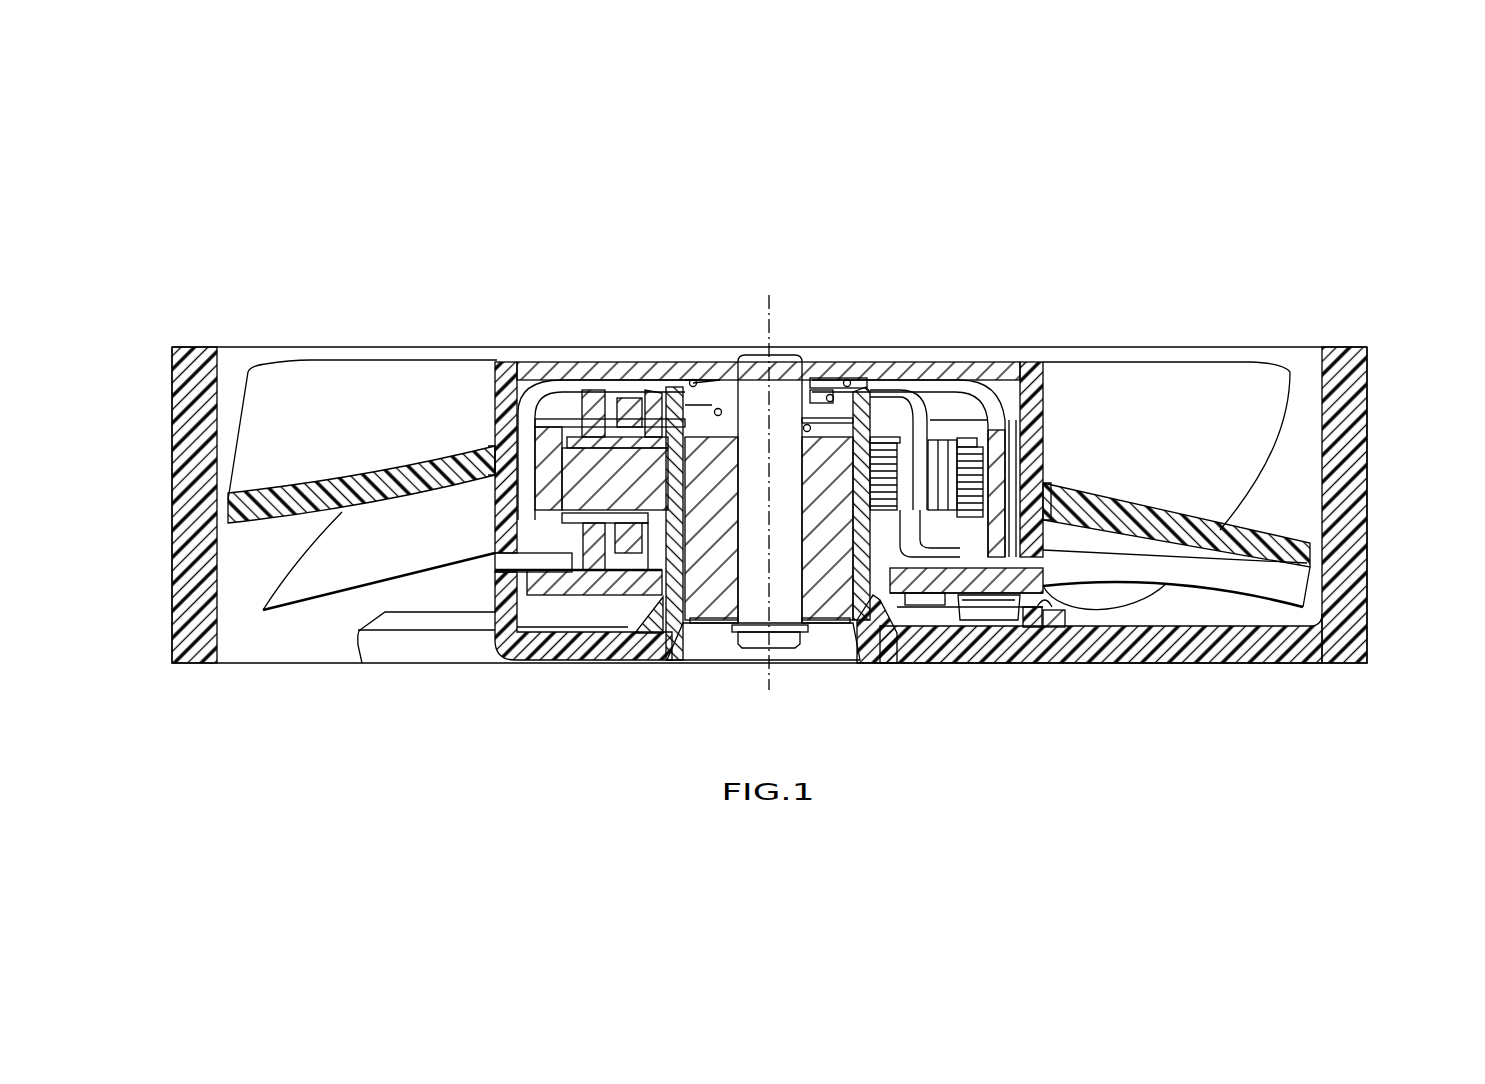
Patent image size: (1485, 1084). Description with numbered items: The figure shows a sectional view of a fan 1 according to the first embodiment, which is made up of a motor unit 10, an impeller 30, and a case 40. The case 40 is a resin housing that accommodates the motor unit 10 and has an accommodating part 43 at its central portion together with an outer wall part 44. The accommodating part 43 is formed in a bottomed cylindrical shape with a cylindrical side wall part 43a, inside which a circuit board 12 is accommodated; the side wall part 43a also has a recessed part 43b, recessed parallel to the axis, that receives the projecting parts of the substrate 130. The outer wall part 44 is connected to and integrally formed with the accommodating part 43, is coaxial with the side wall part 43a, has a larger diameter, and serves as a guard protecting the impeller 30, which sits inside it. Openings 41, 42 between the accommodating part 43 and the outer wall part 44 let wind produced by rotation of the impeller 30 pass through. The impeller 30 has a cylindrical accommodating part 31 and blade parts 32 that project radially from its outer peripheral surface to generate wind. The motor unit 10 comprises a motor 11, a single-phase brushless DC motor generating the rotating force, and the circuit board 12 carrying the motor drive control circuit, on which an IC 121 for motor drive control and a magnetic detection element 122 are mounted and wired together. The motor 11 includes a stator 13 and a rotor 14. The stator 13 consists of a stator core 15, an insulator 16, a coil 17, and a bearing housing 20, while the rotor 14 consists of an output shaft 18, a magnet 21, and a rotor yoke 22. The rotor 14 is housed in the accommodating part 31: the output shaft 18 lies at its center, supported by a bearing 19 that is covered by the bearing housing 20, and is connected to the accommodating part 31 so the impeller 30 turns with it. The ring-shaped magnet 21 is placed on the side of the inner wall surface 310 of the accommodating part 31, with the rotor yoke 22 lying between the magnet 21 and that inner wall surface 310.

The fan 1 is at (1358, 288).
The motor unit 10 is at (340, 628).
The motor 11 is at (482, 398).
The circuit board 12 is at (938, 593).
The stator 13 is at (693, 733).
The rotor 14 is at (593, 242).
The stator core 15 is at (587, 482).
The insulator 16 is at (572, 557).
The coil 17 is at (623, 553).
The output shaft 18 is at (783, 385).
The bearing 19 is at (707, 437).
The bearing housing 20 is at (672, 612).
The magnet 21 is at (988, 378).
The rotor yoke 22 is at (641, 367).
The impeller 30 is at (495, 242).
The accommodating part 31 is at (488, 362).
The blade parts 32 is at (467, 376).
The case 40 is at (172, 373).
The opening 41 is at (239, 378).
The opening 42 is at (220, 641).
The accommodating part 43 is at (487, 614).
The side wall part 43a is at (492, 600).
The recessed part 43b is at (1050, 600).
The outer wall part 44 is at (181, 492).
The IC 121 is at (913, 605).
The magnetic detection element 122 is at (1000, 620).
The substrate 130 is at (966, 676).
The inner wall surface 310 is at (1012, 398).